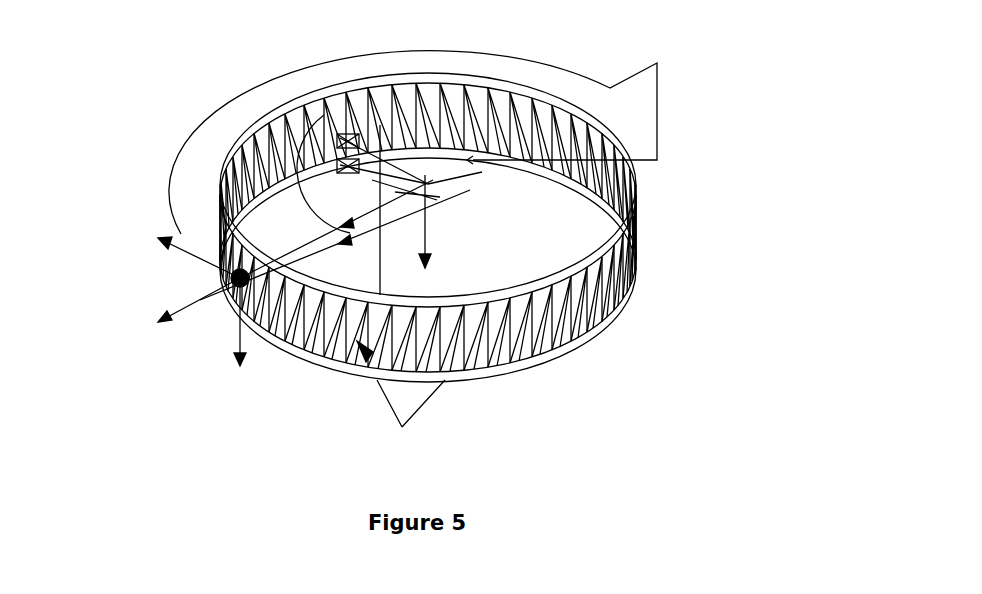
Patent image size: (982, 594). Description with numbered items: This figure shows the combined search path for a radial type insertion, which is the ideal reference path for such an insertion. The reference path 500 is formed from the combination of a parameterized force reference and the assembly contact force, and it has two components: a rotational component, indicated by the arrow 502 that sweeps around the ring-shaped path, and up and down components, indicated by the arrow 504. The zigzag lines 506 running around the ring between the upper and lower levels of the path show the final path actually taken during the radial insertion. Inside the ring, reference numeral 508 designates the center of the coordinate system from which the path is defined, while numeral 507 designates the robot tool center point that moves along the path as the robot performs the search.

The reference path 500 is at (155, 63).
The arrow 502 is at (628, 88).
The arrow 504 is at (384, 405).
The zigzag lines 506 is at (500, 340).
The robot tool center point 507 is at (236, 286).
The center for the coordinate system 508 is at (448, 189).